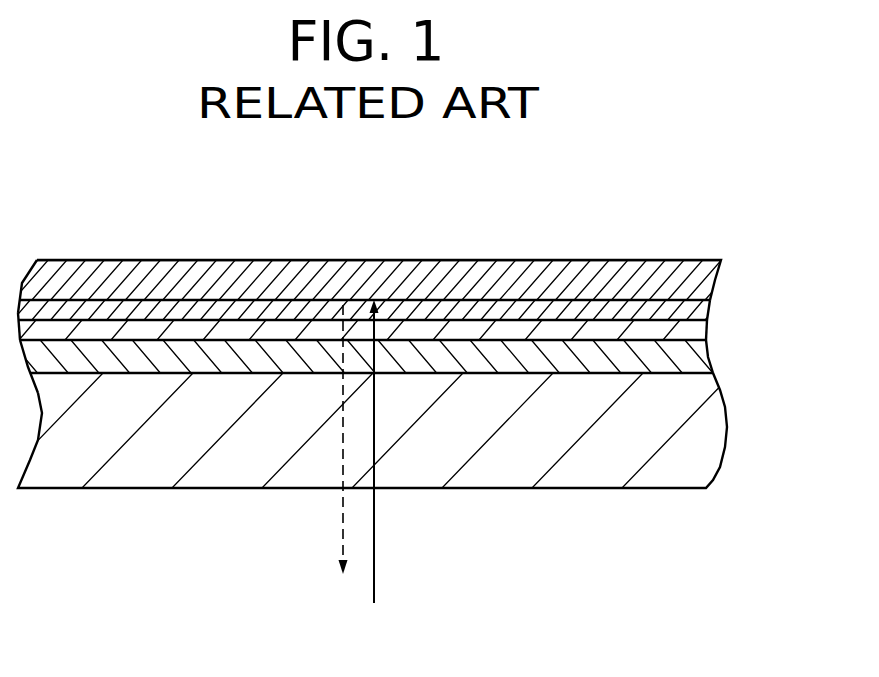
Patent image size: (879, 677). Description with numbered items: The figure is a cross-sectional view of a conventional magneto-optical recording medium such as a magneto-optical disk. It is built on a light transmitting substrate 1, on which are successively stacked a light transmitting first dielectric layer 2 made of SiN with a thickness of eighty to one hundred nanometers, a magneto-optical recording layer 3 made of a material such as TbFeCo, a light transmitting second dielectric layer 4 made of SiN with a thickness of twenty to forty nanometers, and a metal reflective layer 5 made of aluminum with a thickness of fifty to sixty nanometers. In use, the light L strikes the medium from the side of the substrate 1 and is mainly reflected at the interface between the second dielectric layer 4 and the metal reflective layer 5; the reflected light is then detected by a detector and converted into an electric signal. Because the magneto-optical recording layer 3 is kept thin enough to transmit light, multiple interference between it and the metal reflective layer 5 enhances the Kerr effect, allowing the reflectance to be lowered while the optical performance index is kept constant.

The light transmitting substrate 1 is at (697, 430).
The first dielectric layer 2 is at (703, 357).
The magneto-optical recording layer 3 is at (692, 327).
The second dielectric layer 4 is at (698, 308).
The metal reflective layer 5 is at (707, 282).
The light L is at (375, 518).